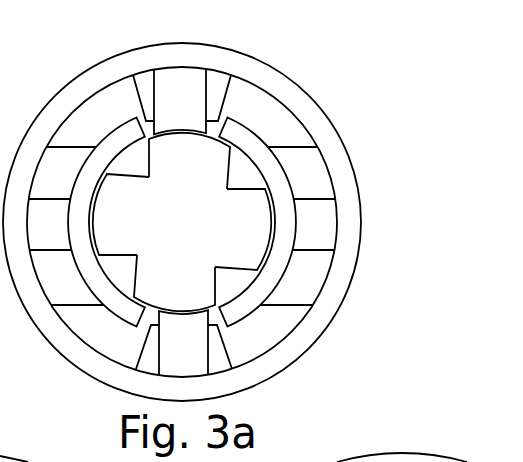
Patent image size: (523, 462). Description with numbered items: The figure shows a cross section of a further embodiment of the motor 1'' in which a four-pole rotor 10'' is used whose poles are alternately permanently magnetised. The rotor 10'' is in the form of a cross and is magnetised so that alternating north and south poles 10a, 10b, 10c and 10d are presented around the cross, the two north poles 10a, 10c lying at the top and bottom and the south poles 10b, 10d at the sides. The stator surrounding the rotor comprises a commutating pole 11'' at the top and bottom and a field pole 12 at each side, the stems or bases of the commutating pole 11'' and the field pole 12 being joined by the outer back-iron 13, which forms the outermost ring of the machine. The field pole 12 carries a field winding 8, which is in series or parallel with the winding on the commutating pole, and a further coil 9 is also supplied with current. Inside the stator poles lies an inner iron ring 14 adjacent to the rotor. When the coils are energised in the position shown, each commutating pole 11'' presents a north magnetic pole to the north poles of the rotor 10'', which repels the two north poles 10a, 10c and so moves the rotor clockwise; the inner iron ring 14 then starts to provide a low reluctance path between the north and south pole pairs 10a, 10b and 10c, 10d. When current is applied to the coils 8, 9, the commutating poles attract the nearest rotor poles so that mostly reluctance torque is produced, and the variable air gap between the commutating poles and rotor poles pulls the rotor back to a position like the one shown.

The electric motor 1'' is at (210, 222).
The field winding 8 is at (216, 82).
The coil 9 is at (310, 168).
The four-pole rotor 10'' is at (182, 222).
The rotor north pole 10a is at (189, 161).
The rotor south pole 10b is at (243, 229).
The rotor north pole 10c is at (174, 283).
The rotor south pole 10d is at (121, 214).
The commutating pole 11'' is at (181, 222).
The field pole 12 is at (182, 224).
The outer back-iron 13 is at (182, 222).
The inner iron ring 14 is at (182, 222).